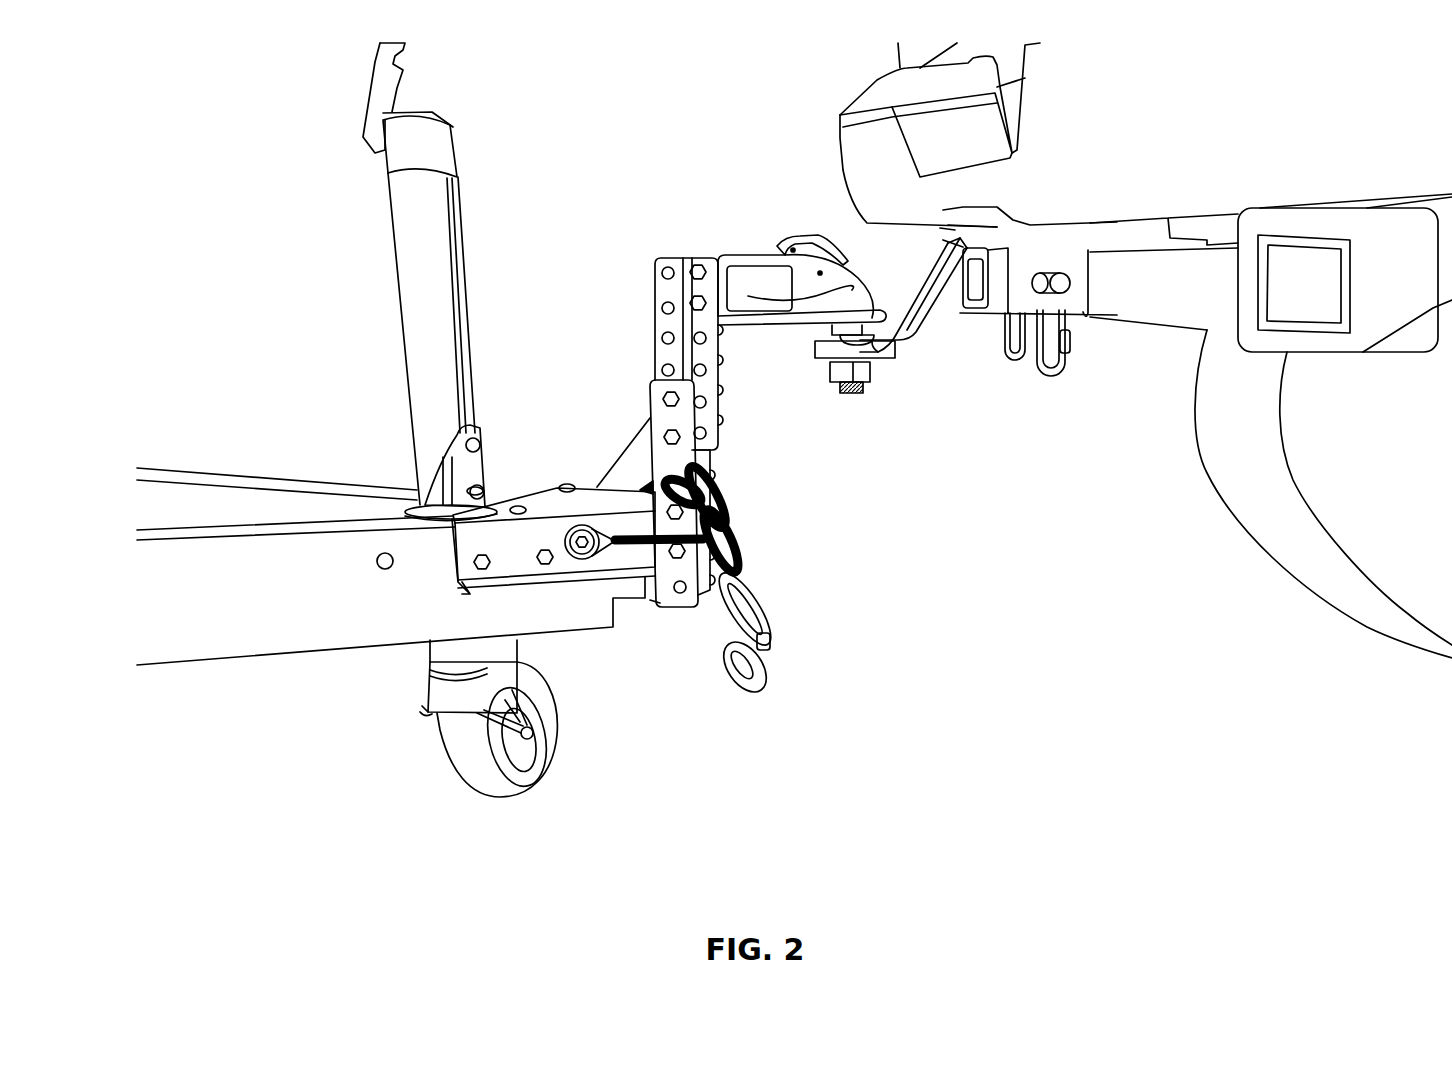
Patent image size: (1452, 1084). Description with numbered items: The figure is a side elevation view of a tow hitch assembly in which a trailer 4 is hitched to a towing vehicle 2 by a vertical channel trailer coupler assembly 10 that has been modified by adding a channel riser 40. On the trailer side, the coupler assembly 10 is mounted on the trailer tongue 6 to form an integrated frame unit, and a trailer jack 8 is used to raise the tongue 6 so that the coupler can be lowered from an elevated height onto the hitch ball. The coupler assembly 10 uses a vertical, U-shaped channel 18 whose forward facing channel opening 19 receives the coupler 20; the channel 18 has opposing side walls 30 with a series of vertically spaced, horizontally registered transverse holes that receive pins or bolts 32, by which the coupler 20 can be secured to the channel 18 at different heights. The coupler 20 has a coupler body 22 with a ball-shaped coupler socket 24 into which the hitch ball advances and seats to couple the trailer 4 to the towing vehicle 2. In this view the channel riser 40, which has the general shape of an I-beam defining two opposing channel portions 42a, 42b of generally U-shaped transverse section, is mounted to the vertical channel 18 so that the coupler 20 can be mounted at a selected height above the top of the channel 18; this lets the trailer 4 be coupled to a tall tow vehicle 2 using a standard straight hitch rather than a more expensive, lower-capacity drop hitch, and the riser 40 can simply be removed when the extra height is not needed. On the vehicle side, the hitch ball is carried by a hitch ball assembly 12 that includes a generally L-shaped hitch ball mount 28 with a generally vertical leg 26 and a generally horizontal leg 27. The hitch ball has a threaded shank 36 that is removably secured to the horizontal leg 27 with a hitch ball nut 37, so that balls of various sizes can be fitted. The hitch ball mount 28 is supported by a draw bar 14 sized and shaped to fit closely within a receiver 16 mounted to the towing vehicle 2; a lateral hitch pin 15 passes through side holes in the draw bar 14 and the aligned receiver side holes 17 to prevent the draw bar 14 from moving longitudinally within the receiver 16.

The towing vehicle 2 is at (1211, 157).
The trailer 4 is at (222, 612).
The trailer tongue 6 is at (545, 613).
The trailer jack 8 is at (418, 232).
The channel mount trailer coupler assembly 10 is at (592, 472).
The hitch ball assembly 12 is at (917, 358).
The draw bar 14 is at (962, 308).
The hitch pin 15 is at (1067, 285).
The receiver 16 is at (990, 250).
The receiver side holes 17 is at (1033, 275).
The vertical channel 18 is at (652, 606).
The channel opening 19 is at (703, 595).
The coupler 20 is at (838, 290).
The coupler body 22 is at (753, 257).
The coupler socket 24 is at (848, 306).
The vertical leg 26 is at (997, 227).
The horizontal leg 27 is at (818, 347).
The hitch ball mount 28 is at (901, 356).
The side wall 30 is at (654, 413).
The pins or bolts 32 is at (697, 260).
The threaded shank 36 is at (850, 382).
The hitch ball nut 37 is at (880, 380).
The channel riser 40 is at (657, 330).
The channel portion 42a is at (667, 258).
The channel portion 42b is at (687, 258).